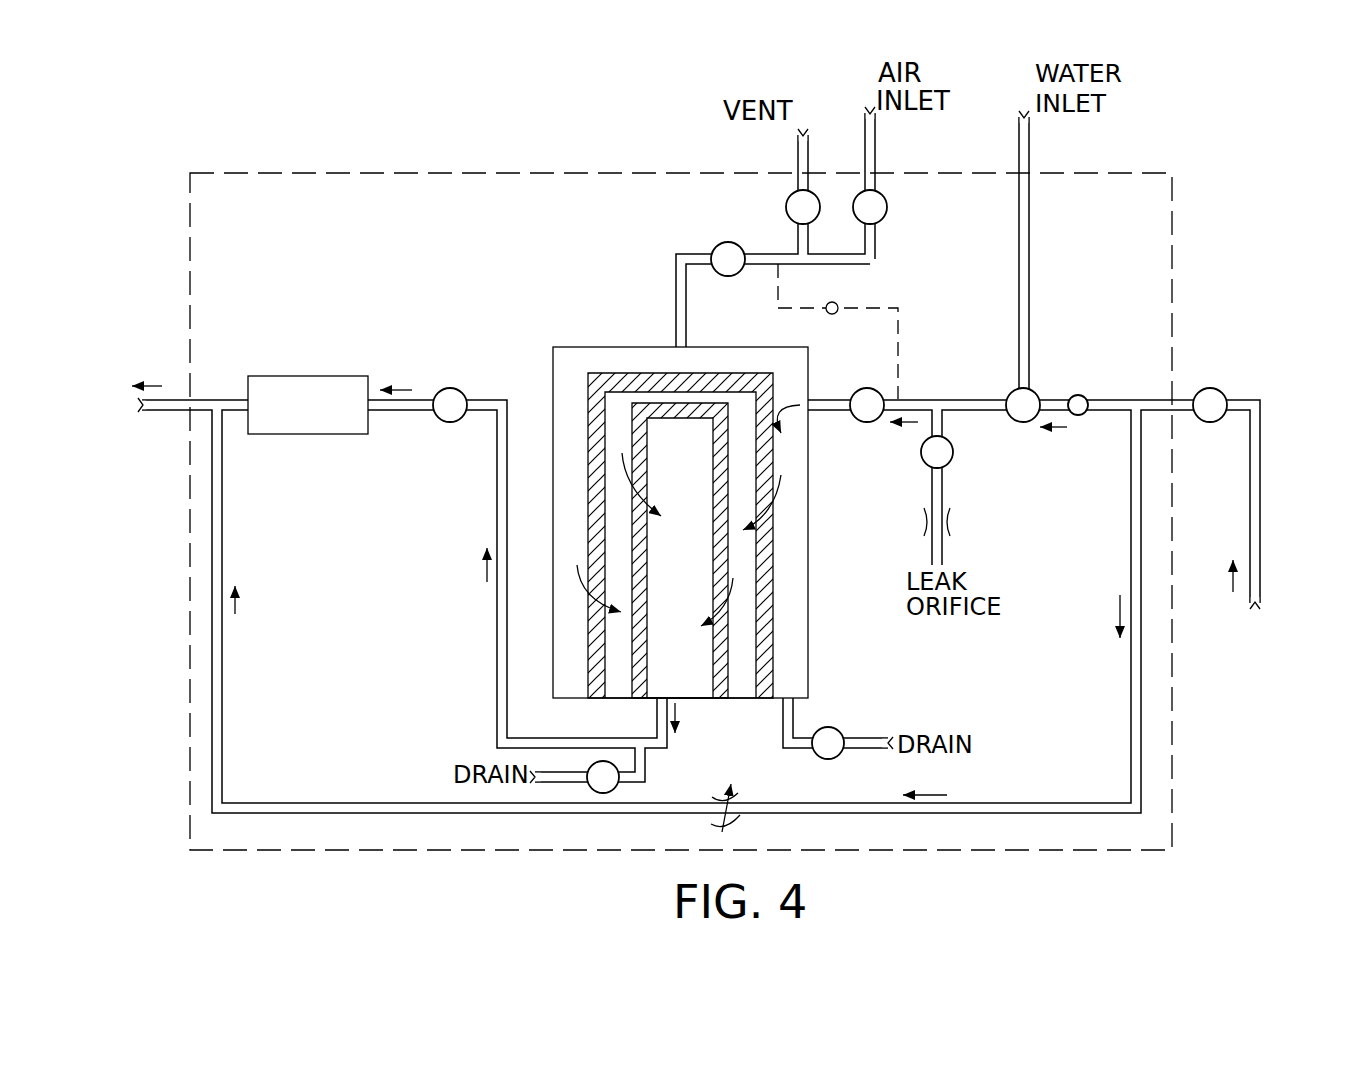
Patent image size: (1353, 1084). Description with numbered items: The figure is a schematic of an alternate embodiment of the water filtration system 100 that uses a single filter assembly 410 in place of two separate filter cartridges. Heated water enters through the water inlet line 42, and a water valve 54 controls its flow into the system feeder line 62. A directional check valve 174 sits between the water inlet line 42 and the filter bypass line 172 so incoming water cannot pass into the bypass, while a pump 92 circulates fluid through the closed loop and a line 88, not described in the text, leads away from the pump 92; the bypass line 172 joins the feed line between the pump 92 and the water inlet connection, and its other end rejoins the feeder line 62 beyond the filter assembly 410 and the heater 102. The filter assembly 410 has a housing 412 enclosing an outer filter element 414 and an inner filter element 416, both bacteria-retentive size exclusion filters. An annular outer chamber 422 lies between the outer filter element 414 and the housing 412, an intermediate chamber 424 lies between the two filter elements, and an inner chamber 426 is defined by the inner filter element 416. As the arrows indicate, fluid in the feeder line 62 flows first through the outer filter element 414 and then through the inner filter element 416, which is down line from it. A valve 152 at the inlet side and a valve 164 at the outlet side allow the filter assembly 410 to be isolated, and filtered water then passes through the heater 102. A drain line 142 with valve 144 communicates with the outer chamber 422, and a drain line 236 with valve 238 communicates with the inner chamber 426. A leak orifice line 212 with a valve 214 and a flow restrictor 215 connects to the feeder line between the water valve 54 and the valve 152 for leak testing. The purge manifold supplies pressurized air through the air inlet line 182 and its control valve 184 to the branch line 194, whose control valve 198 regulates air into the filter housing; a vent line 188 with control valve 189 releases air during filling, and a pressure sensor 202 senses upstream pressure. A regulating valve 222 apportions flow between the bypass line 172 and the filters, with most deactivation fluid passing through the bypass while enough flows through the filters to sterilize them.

The water filtration system 100 is at (472, 166).
The heater 102 is at (308, 375).
The system feeder line 62 is at (162, 412).
The valve 164 is at (444, 424).
The filter bypass line 172 is at (224, 682).
The filter assembly 410 is at (692, 490).
The housing 412 is at (573, 345).
The outer filter element 414 is at (770, 535).
The inner filter element 416 is at (773, 629).
The annular outer chamber 422 is at (793, 488).
The intermediate chamber 424 is at (743, 572).
The inner chamber 426 is at (666, 655).
The vent line 188 is at (798, 155).
The air inlet line 182 is at (876, 149).
The control valve 189 is at (787, 196).
The control valve 198 is at (717, 242).
The control valve 184 is at (888, 207).
The second branch line 194 is at (687, 295).
The first pressure sensor 202 is at (838, 302).
The valve 152 is at (868, 388).
The water inlet line 42 is at (1030, 255).
The water valve 54 is at (1033, 390).
The directional check valve 174 is at (1086, 397).
The pump 92 is at (1214, 388).
The outlet line 88 is at (1260, 562).
The valve 214 is at (955, 452).
The first leak orifice line 212 is at (943, 483).
The flow restrictor 215 is at (955, 522).
The drain line 142 is at (793, 715).
The valve 144 is at (840, 729).
The valve 238 is at (596, 794).
The drain line 236 is at (625, 783).
The regulating valve 222 is at (740, 818).